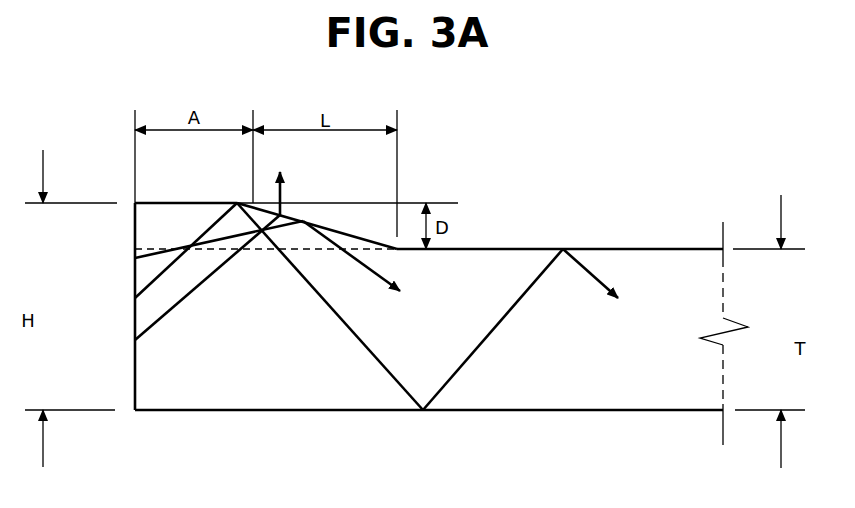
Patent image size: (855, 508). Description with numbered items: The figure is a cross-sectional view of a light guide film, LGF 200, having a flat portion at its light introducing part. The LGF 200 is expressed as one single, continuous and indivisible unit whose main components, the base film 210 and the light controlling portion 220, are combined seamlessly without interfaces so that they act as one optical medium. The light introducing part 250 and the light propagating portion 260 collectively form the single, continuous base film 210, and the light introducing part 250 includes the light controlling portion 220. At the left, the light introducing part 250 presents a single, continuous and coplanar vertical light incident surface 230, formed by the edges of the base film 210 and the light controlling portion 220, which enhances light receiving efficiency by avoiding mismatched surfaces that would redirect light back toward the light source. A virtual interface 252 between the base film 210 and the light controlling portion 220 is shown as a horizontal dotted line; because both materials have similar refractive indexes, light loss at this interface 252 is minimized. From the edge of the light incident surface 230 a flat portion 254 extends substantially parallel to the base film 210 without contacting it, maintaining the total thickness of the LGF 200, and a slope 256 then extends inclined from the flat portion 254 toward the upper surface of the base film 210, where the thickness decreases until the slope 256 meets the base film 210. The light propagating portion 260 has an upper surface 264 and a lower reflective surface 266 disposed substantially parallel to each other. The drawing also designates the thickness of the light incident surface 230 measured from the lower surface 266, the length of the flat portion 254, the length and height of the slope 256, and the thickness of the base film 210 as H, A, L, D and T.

The LGF 200 is at (714, 121).
The base film 210 is at (580, 362).
The light controlling portion 220 is at (165, 227).
The light incident surface 230 is at (133, 370).
The light introducing part 250 is at (205, 362).
The virtual interface 252 is at (270, 248).
The flat portion 254 is at (200, 203).
The slope 256 is at (339, 228).
The light propagating portion 260 is at (670, 358).
The upper surface 264 is at (678, 249).
The lower surface 266 is at (386, 412).